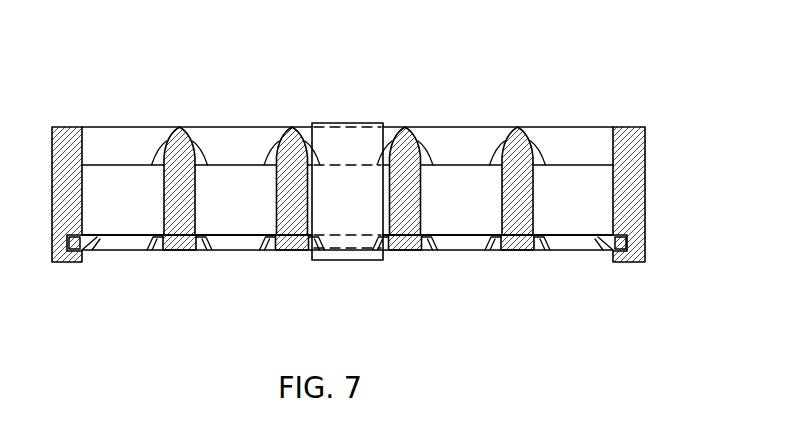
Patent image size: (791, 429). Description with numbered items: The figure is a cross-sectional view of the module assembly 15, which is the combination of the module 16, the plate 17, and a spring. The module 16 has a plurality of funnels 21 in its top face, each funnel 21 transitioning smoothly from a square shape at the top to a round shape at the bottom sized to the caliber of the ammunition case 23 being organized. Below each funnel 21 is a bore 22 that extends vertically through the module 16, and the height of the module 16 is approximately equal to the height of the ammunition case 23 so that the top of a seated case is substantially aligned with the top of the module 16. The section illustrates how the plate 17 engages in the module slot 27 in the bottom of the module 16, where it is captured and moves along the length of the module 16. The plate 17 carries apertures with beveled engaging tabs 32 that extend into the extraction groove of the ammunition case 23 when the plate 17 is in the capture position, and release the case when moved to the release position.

The module assembly 15 is at (117, 55).
The module 16 is at (645, 195).
The plate 17 is at (515, 250).
The funnel 21 is at (457, 143).
The bore 22 is at (565, 197).
The ammunition case 23 is at (347, 260).
The module slot 27 is at (80, 253).
The engaging tab 32 is at (317, 238).